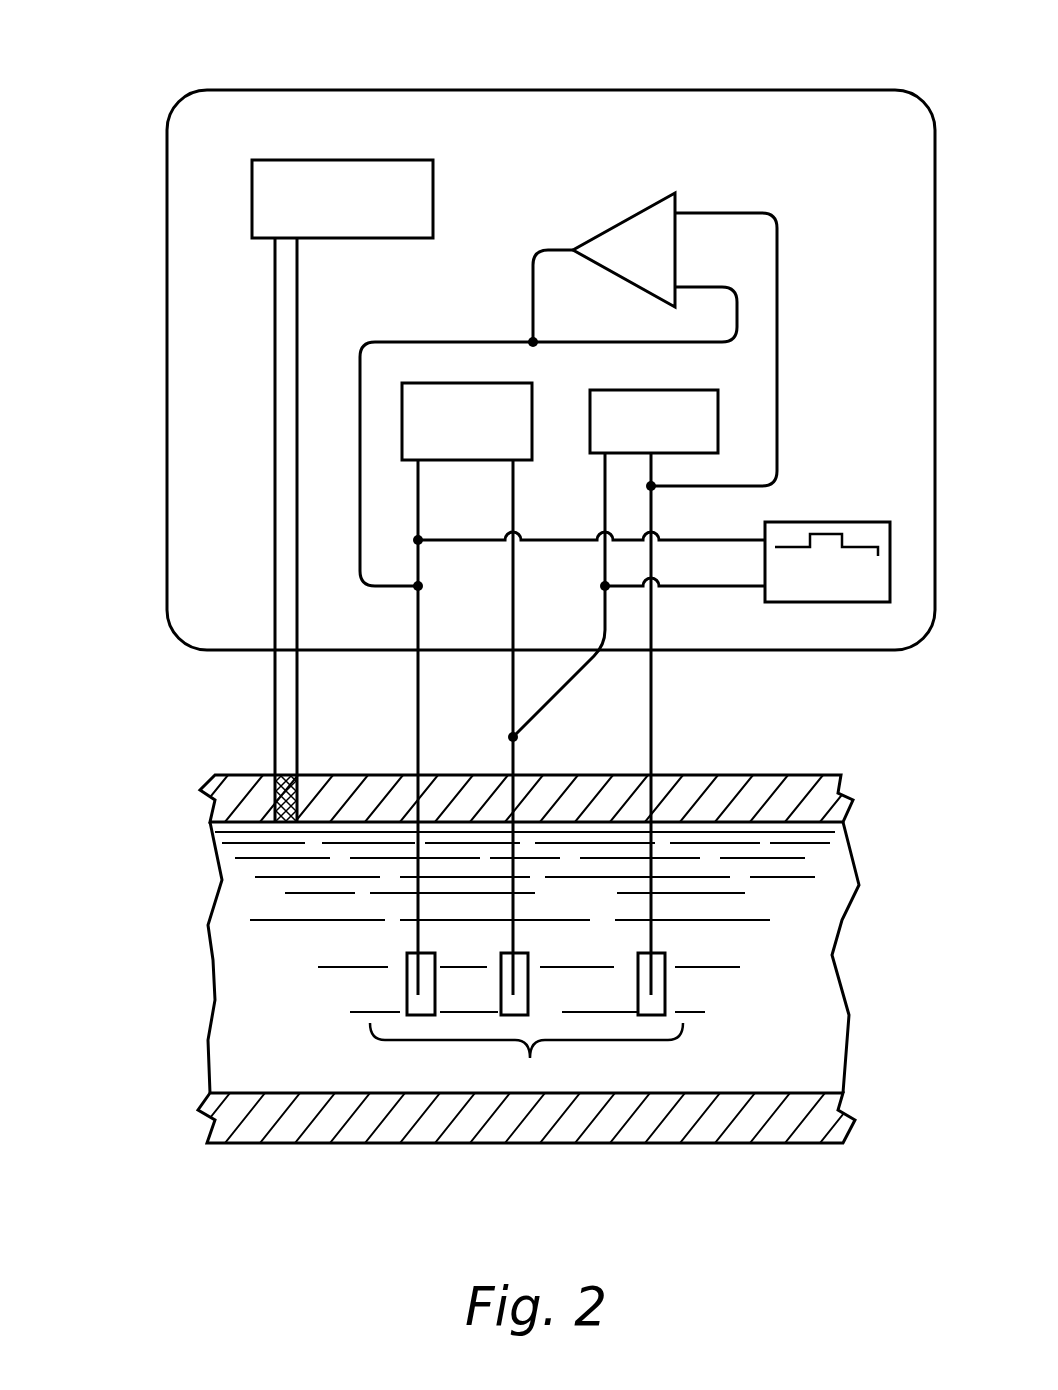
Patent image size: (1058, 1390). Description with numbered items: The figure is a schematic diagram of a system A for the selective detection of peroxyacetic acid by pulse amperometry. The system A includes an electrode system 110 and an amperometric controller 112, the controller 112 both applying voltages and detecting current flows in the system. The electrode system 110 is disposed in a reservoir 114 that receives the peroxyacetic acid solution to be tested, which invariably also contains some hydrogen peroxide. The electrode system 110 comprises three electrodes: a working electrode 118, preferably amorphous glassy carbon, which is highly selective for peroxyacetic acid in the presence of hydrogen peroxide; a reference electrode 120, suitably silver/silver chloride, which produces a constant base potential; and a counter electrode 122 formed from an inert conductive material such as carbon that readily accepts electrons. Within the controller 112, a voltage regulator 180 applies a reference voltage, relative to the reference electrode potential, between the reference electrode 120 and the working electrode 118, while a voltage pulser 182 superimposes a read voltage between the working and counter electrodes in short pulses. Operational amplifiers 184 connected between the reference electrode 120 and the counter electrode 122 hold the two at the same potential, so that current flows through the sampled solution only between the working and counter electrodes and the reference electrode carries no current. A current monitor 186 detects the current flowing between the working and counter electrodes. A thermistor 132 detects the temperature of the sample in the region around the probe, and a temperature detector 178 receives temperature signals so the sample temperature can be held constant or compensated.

The system for selective detection of peroxyacetic acid A is at (118, 422).
The amperometric controller 112 is at (280, 118).
The temperature detector 178 is at (350, 238).
The operational amplifiers 184 is at (617, 220).
The current monitor 186 is at (474, 383).
The voltage regulator 180 is at (656, 390).
The voltage pulser 182 is at (835, 522).
The reservoir 114 is at (778, 898).
The thermistor 132 is at (283, 805).
The counter electrode 122 is at (407, 985).
The working electrode 118 is at (528, 1000).
The reference electrode 120 is at (665, 990).
The electrode system 110 is at (526, 1058).